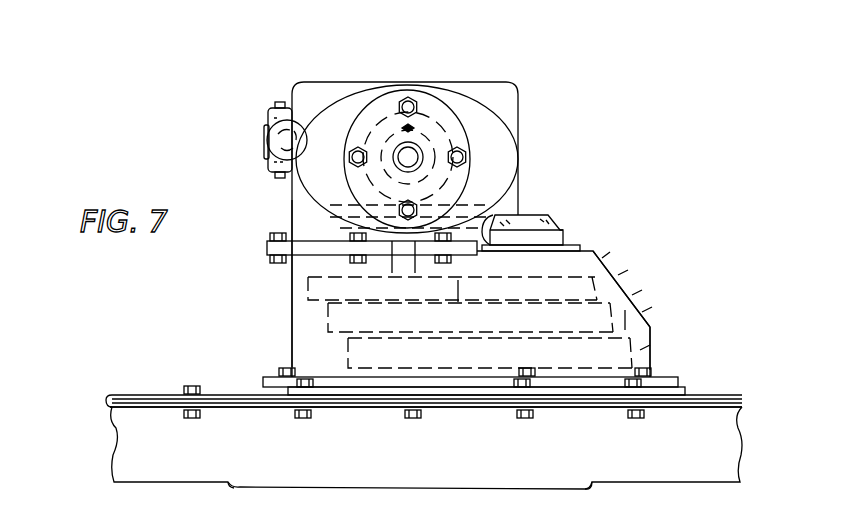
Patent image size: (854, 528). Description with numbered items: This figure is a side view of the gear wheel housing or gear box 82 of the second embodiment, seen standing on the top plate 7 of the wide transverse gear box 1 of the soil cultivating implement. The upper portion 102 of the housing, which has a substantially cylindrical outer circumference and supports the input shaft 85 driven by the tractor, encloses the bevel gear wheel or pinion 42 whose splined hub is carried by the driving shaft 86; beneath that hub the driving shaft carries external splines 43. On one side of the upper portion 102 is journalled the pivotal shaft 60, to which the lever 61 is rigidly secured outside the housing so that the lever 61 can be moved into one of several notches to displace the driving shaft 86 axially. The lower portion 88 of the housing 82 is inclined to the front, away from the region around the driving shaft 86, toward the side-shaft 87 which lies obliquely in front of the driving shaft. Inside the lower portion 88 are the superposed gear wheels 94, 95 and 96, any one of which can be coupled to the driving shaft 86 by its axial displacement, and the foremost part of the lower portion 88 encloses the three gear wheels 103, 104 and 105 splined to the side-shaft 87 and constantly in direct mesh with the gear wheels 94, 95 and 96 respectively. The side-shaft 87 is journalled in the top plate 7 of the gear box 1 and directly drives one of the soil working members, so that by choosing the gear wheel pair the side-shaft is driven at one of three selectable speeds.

The gear box 1 is at (148, 392).
The top plate 7 is at (724, 396).
The bevel gear wheel or pinion 42 is at (346, 182).
The external splines 43 is at (407, 159).
The pivotal shaft 60 is at (265, 139).
The lever 61 is at (272, 154).
The gear wheel housing or gear box 82 is at (290, 204).
The input shaft 85 is at (410, 155).
The driving shaft 86 is at (355, 224).
The side-shaft 87 is at (597, 252).
The lower portion 88 is at (636, 291).
The gear wheel 94 is at (306, 290).
The gear wheel 95 is at (326, 318).
The gear wheel 96 is at (346, 350).
The upper portion 102 is at (522, 110).
The gear wheel 103 is at (632, 263).
The gear wheel 104 is at (650, 305).
The gear wheel 105 is at (660, 338).